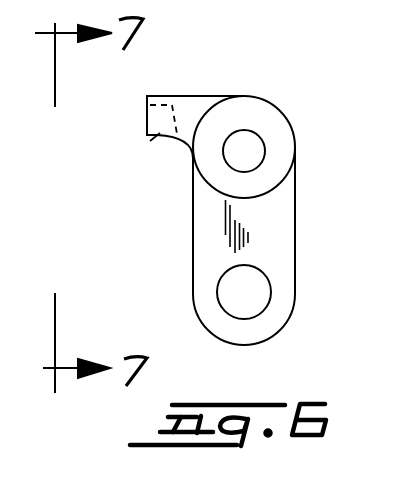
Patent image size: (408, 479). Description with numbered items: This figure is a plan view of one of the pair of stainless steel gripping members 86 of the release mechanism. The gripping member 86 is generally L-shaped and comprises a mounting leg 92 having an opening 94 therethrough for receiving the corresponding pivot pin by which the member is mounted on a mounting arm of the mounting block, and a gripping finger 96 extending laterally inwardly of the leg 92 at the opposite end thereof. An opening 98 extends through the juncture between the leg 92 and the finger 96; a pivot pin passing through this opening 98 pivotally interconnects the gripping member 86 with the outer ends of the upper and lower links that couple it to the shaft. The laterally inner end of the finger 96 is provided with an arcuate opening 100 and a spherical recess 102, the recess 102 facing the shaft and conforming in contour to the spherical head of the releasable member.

The gripping member 86 is at (293, 104).
The mounting leg 92 is at (278, 240).
The opening 94 is at (271, 301).
The gripping finger 96 is at (192, 102).
The opening 98 is at (265, 152).
The arcuate opening 100 is at (147, 104).
The spherical recess 102 is at (160, 133).